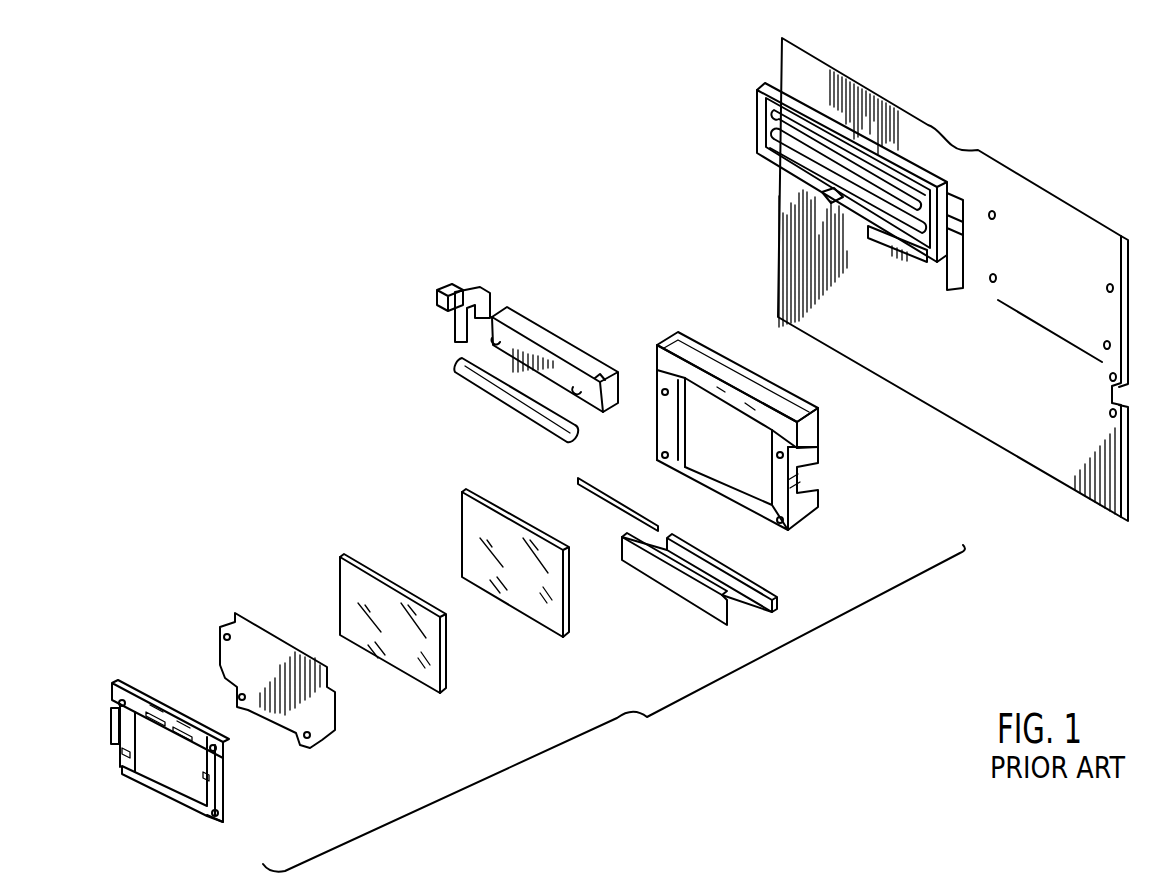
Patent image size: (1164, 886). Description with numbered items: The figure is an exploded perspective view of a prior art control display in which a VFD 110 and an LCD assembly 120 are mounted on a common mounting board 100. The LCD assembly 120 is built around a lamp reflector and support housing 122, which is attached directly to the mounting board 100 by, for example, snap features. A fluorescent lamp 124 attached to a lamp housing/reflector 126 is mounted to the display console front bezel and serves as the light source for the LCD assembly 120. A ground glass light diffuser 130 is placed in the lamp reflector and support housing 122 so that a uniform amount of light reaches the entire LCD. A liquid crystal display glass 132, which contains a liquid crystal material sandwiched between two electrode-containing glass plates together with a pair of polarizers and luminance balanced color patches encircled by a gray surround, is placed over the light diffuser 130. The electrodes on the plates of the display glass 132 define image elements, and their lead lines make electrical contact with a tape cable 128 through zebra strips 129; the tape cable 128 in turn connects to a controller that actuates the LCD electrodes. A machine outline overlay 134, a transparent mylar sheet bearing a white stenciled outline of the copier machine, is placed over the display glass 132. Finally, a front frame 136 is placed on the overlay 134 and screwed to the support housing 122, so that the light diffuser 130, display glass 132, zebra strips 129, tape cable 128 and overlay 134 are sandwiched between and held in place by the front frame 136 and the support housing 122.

The mounting board 100 is at (1057, 217).
The VFD 110 is at (757, 123).
The LCD assembly 120 is at (614, 708).
The lamp reflector and support housing 122 is at (700, 342).
The fluorescent lamp 124 is at (456, 366).
The lamp housing/reflector 126 is at (437, 296).
The tape cable 128 is at (690, 600).
The zebra strips 129 is at (577, 480).
The ground glass light diffuser 130 is at (462, 533).
The liquid crystal display glass 132 is at (338, 577).
The machine outline overlay 134 is at (233, 617).
The front frame 136 is at (111, 712).